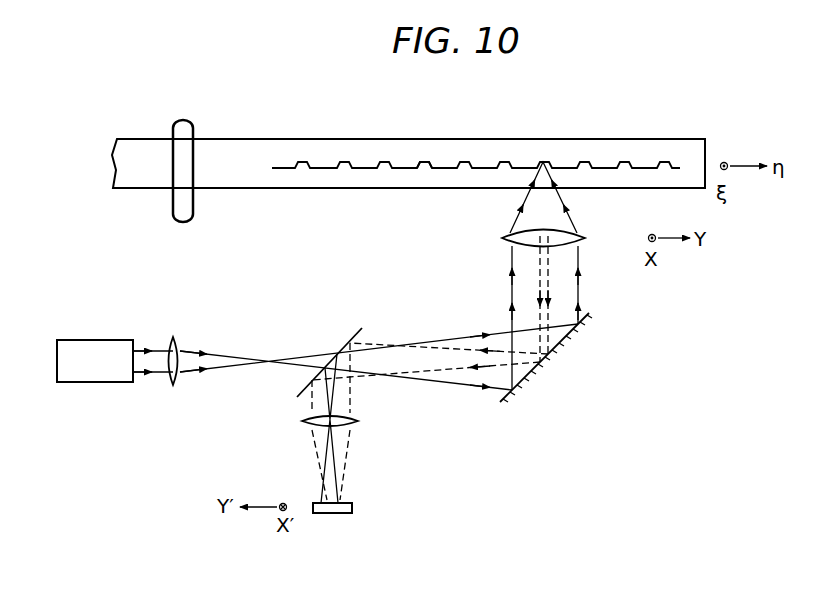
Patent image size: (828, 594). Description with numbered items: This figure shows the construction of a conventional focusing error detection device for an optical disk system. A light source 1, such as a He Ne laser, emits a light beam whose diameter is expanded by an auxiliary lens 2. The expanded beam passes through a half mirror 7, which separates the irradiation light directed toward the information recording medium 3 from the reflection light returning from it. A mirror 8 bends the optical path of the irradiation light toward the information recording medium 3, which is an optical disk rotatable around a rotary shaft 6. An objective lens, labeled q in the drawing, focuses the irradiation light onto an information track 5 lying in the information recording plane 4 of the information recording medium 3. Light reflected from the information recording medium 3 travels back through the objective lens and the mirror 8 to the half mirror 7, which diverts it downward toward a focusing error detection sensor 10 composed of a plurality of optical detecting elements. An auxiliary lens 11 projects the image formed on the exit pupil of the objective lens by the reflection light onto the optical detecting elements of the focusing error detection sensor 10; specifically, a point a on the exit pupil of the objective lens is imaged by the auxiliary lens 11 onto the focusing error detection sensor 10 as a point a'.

The light source 1 is at (121, 340).
The auxiliary lens 2 is at (174, 337).
The information recording medium 3 is at (247, 146).
The information recording plane 4 is at (367, 171).
The information track 5 is at (425, 161).
The rotary shaft 6 is at (185, 121).
The half mirror 7 is at (352, 337).
The mirror 8 is at (582, 326).
The focusing error detection sensor 10 is at (355, 509).
The auxiliary lens 11 is at (358, 421).
The objective lens q is at (585, 238).
The point on the exit pupil a is at (558, 239).
The image point a' is at (313, 493).